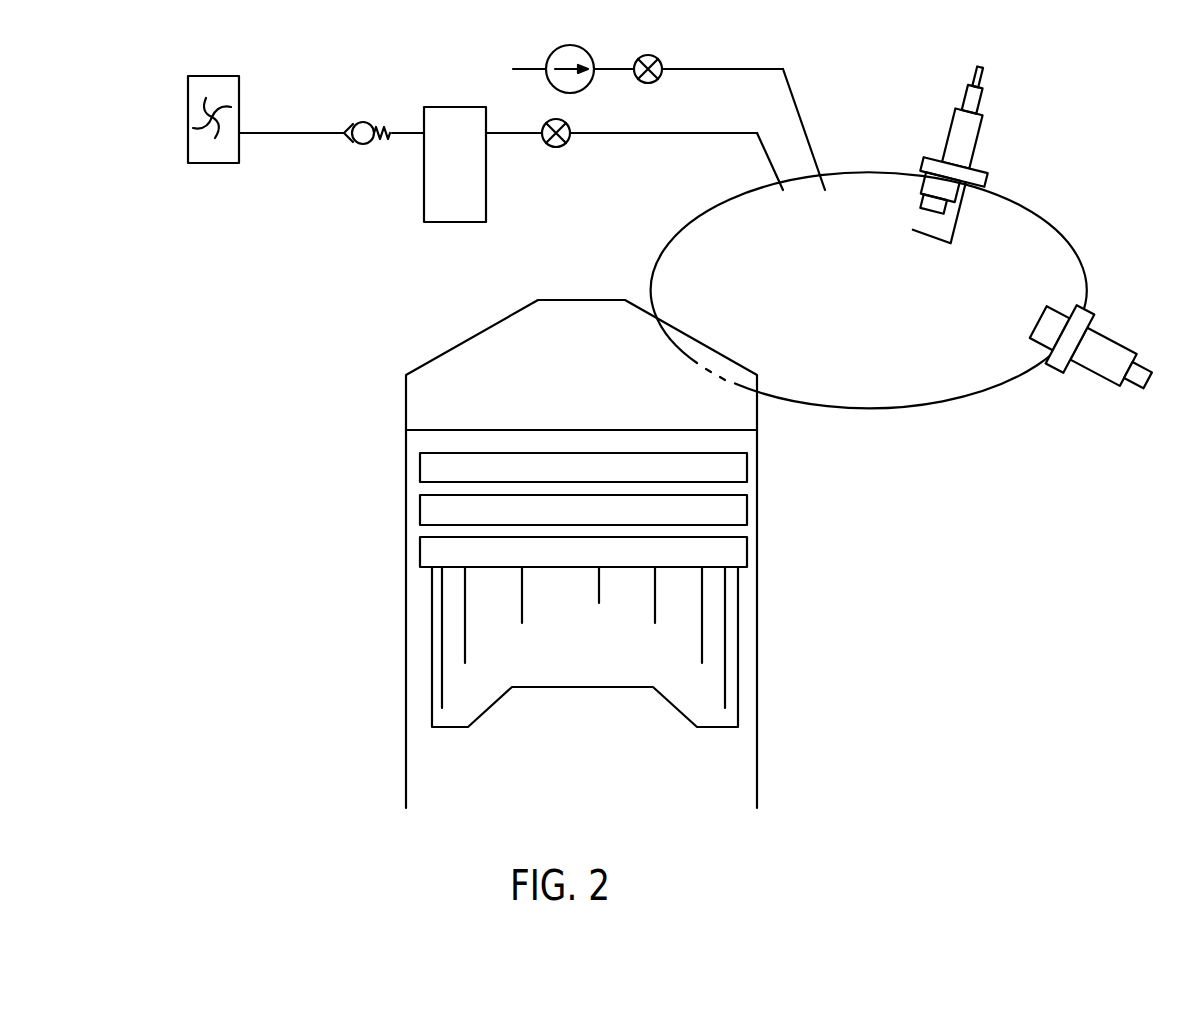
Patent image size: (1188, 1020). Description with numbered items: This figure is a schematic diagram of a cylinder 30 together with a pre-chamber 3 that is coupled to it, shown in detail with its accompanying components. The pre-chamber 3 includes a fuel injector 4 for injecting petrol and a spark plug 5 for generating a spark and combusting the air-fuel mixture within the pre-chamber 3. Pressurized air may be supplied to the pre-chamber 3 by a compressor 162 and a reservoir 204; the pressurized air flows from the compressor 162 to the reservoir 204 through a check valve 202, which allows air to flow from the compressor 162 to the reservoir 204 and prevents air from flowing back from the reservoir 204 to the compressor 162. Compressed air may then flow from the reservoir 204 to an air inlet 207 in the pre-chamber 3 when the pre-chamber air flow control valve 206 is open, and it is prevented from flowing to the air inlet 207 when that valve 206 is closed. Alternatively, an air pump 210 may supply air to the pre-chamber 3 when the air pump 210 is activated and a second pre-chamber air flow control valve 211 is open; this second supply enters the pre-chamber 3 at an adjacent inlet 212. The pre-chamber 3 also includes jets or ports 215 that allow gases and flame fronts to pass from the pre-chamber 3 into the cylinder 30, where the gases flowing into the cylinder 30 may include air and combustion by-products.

The compressor 162 is at (227, 143).
The check valve 202 is at (363, 121).
The reservoir 204 is at (455, 107).
The pre-chamber air flow control valve 206 is at (556, 147).
The air inlet 207 is at (786, 197).
The air pump 210 is at (588, 53).
The pre-chamber air flow control valve 211 is at (650, 83).
The fuel flow 212 is at (828, 197).
The pre-chamber 3 is at (690, 295).
The fuel injector 4 is at (1107, 358).
The spark plug 5 is at (962, 137).
The cylinder 30 is at (470, 372).
The jets or ports 215 is at (725, 397).